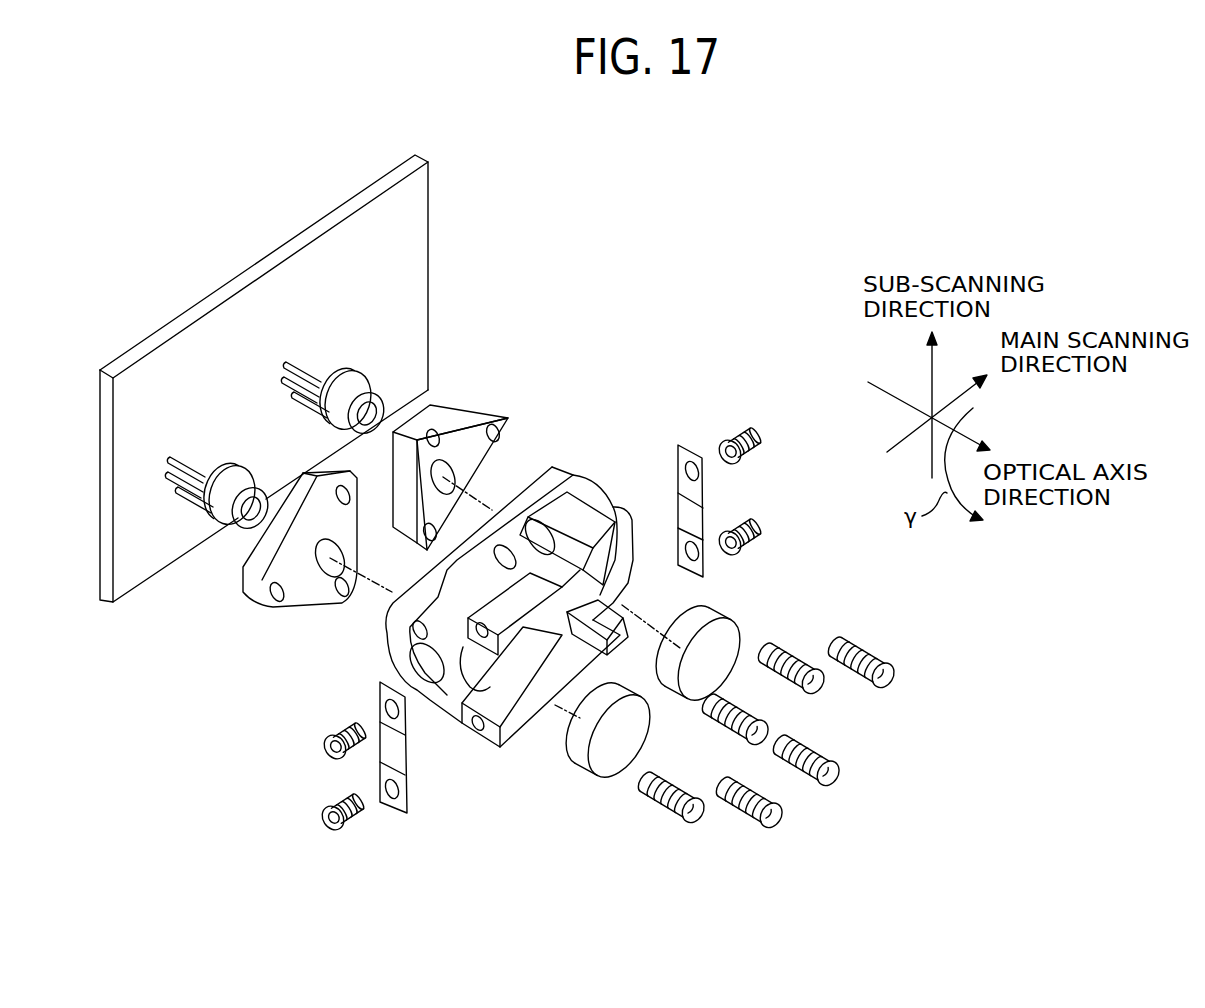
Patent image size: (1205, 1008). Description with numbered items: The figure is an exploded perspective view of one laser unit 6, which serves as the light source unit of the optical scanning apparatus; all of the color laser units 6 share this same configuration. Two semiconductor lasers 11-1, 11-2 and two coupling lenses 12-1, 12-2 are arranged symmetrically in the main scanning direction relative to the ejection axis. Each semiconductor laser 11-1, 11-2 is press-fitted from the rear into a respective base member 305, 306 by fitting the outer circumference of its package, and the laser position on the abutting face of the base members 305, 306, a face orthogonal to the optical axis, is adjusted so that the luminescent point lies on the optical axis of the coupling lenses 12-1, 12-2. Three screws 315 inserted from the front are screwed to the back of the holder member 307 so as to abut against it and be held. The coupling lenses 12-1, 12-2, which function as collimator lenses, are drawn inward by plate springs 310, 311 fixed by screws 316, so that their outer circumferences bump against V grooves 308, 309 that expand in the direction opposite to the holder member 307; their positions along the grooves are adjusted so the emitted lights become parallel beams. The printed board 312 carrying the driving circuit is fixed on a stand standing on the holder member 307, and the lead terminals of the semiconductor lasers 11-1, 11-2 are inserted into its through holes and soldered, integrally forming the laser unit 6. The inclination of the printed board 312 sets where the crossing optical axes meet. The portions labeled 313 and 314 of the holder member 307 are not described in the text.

The laser unit 6 is at (596, 256).
The printed board 312 is at (429, 262).
The semiconductor laser 11-1 is at (366, 392).
The semiconductor laser 11-2 is at (245, 478).
The base member 305 is at (460, 406).
The base member 306 is at (250, 554).
The holder member 307 is at (612, 518).
The V groove 308 is at (630, 600).
The V groove 309 is at (517, 667).
The plate spring 310 is at (712, 512).
The plate spring 311 is at (383, 755).
The housing block 313 is at (440, 712).
The housing flange plate 314 is at (395, 645).
The screws 315 is at (768, 737).
The screws 316 is at (755, 432).
The coupling lens 12-1 is at (740, 640).
The coupling lens 12-2 is at (616, 778).